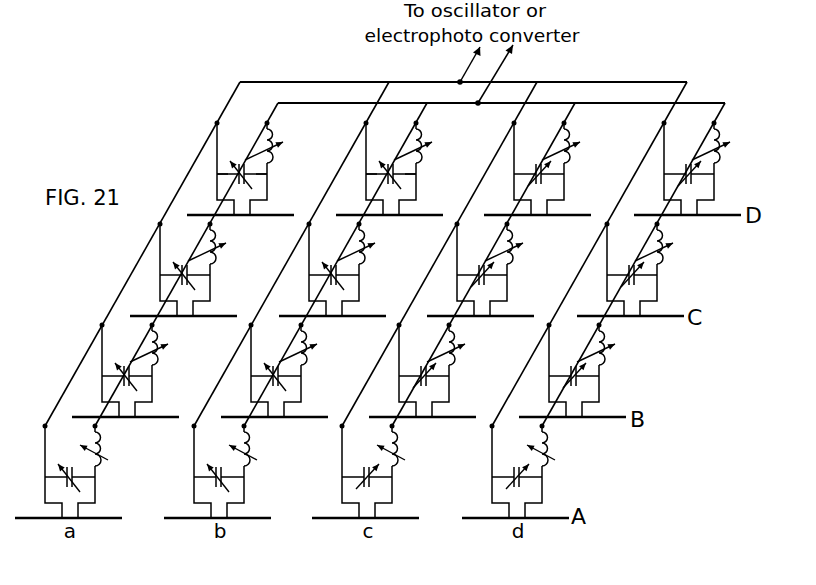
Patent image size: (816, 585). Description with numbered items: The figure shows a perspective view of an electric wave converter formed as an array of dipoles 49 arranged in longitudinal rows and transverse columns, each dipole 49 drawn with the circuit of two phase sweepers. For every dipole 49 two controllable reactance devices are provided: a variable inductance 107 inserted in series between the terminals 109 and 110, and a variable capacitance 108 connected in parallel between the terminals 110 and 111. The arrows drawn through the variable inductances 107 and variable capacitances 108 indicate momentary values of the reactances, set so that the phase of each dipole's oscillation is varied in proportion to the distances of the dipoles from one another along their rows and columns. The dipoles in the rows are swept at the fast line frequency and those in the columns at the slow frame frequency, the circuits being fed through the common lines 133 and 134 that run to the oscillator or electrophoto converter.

The dipole 49 is at (258, 215).
The variable inductance 107 is at (270, 153).
The variable capacitance 108 is at (242, 167).
The terminal 109 is at (268, 126).
The terminal 110 is at (267, 174).
The terminal 111 is at (217, 174).
The first bus line to oscillator 133 is at (460, 82).
The second bus line to oscillator 134 is at (478, 103).